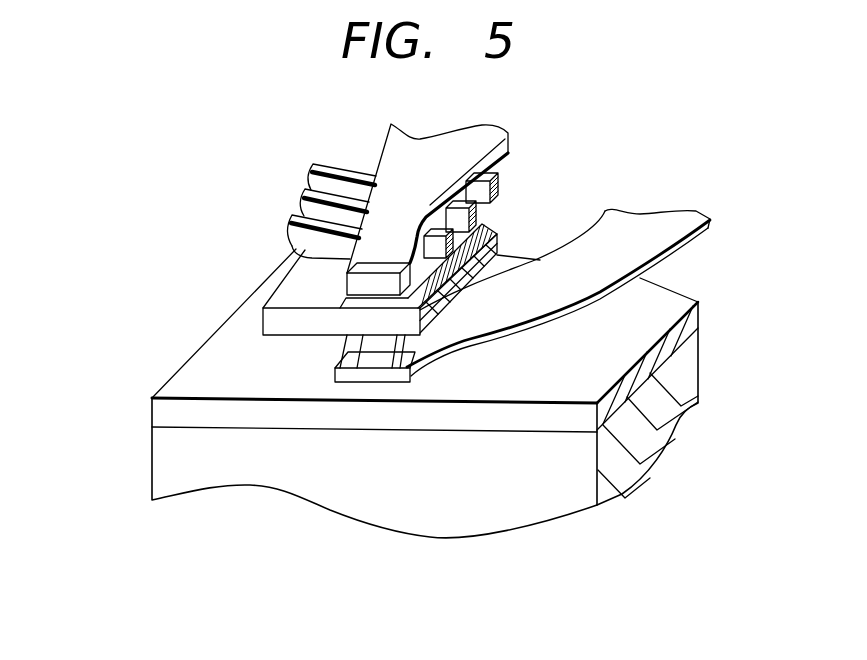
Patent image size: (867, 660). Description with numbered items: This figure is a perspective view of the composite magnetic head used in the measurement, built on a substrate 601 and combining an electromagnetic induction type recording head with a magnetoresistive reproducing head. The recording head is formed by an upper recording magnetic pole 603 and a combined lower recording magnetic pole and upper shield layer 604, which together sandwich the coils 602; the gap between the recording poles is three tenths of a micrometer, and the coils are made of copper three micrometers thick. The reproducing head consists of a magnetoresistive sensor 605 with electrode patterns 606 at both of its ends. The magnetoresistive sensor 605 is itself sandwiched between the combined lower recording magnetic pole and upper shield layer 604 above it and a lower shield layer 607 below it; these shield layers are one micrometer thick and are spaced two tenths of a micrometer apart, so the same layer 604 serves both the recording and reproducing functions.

The substrate 601 is at (487, 510).
The coils 602 is at (313, 172).
The upper recording magnetic pole 603 is at (353, 281).
The combined lower recording magnetic pole and upper shield layer 604 is at (282, 320).
The magnetoresistive sensor 605 is at (370, 380).
The electrode patterns 606 is at (340, 352).
The lower shield layer 607 is at (163, 415).